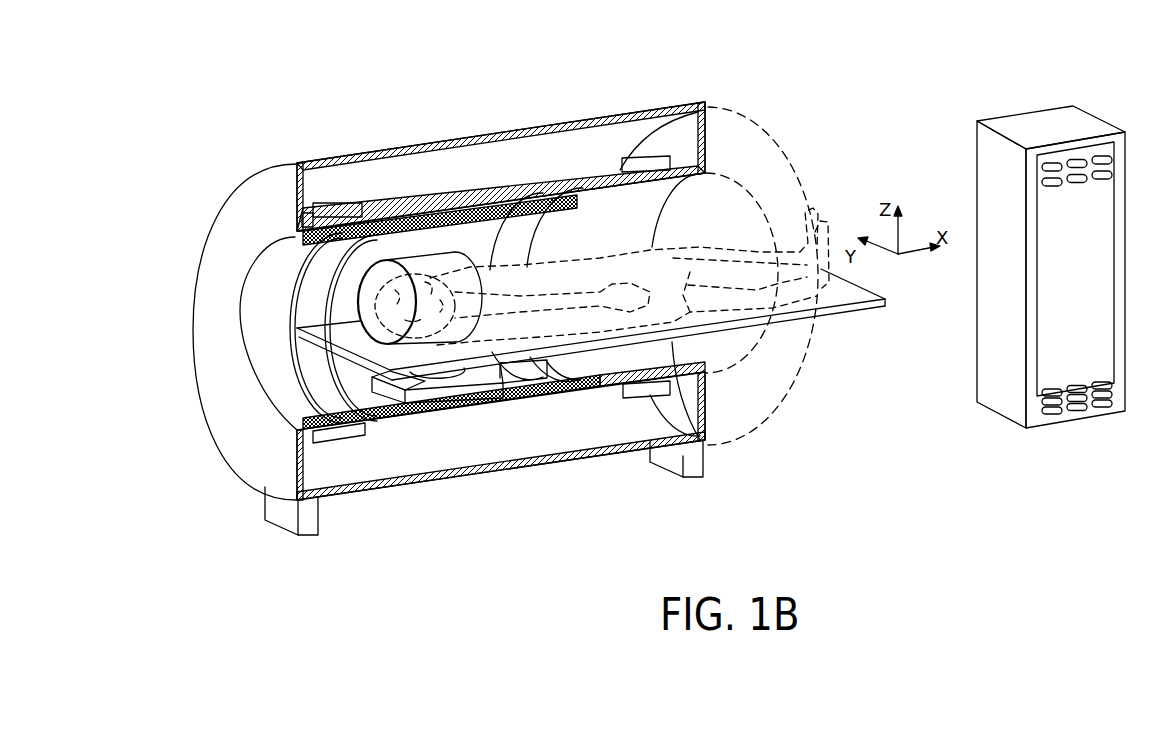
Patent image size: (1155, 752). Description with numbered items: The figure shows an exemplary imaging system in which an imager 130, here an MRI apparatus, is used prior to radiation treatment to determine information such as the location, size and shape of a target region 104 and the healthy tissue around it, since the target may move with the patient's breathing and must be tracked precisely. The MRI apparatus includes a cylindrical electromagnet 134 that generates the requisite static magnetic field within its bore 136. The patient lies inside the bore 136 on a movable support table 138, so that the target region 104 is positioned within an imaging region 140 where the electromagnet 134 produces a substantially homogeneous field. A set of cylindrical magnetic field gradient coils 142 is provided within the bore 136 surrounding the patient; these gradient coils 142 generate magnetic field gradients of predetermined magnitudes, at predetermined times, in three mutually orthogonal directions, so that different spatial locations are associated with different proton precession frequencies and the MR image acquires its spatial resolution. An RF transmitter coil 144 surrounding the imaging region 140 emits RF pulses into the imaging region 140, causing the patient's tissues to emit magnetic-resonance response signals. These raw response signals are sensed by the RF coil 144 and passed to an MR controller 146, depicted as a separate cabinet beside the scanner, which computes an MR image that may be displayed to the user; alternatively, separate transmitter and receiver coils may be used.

The imager 130 is at (888, 70).
The target region 104 is at (372, 294).
The imaging region 140 is at (412, 254).
The cylindrical electromagnet 134 is at (504, 186).
The cylindrical magnetic field gradient coils 142 is at (580, 203).
The bore 136 is at (732, 347).
The movable support table 138 is at (853, 307).
The RF transmitter coil 144 is at (354, 396).
The MR controller 146 is at (983, 404).